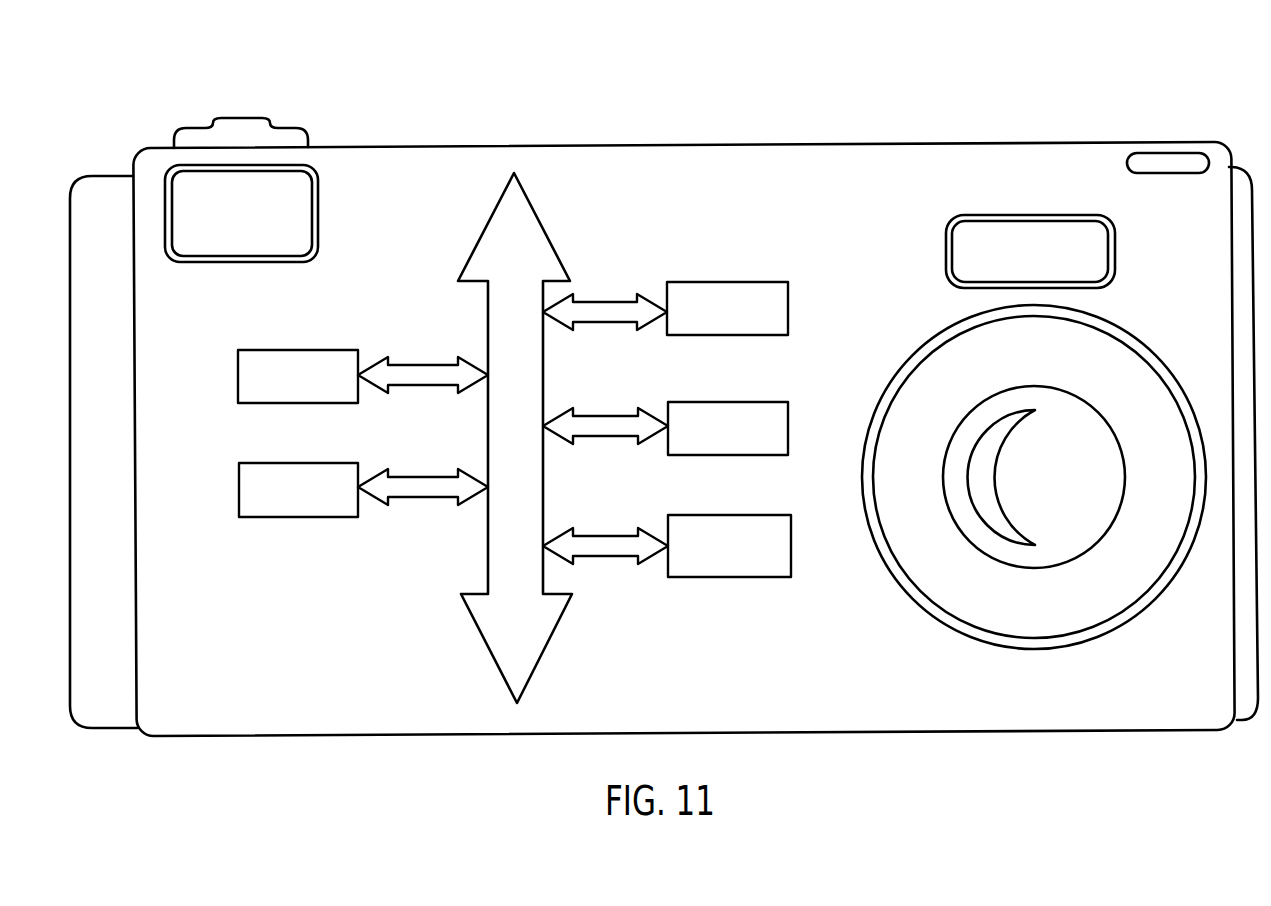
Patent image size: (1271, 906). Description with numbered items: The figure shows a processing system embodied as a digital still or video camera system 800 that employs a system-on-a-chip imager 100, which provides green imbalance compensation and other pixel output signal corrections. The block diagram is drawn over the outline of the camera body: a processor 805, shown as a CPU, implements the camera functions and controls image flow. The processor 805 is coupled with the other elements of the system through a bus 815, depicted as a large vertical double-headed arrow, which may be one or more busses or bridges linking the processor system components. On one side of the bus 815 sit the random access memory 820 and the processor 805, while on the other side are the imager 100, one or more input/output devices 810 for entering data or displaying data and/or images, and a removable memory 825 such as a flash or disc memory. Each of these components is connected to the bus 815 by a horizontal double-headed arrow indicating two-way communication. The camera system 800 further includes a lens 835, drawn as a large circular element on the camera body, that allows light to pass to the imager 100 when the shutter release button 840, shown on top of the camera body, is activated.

The digital still or video camera system 800 is at (1103, 92).
The shutter release button 840 is at (242, 125).
The lens 835 is at (1113, 327).
The bus 815 is at (492, 657).
The processor 805 is at (238, 381).
The random access memory 820 is at (239, 495).
The system-on-a-chip imager 100 is at (789, 307).
The input/output device 810 is at (789, 427).
The removable memory 825 is at (791, 548).